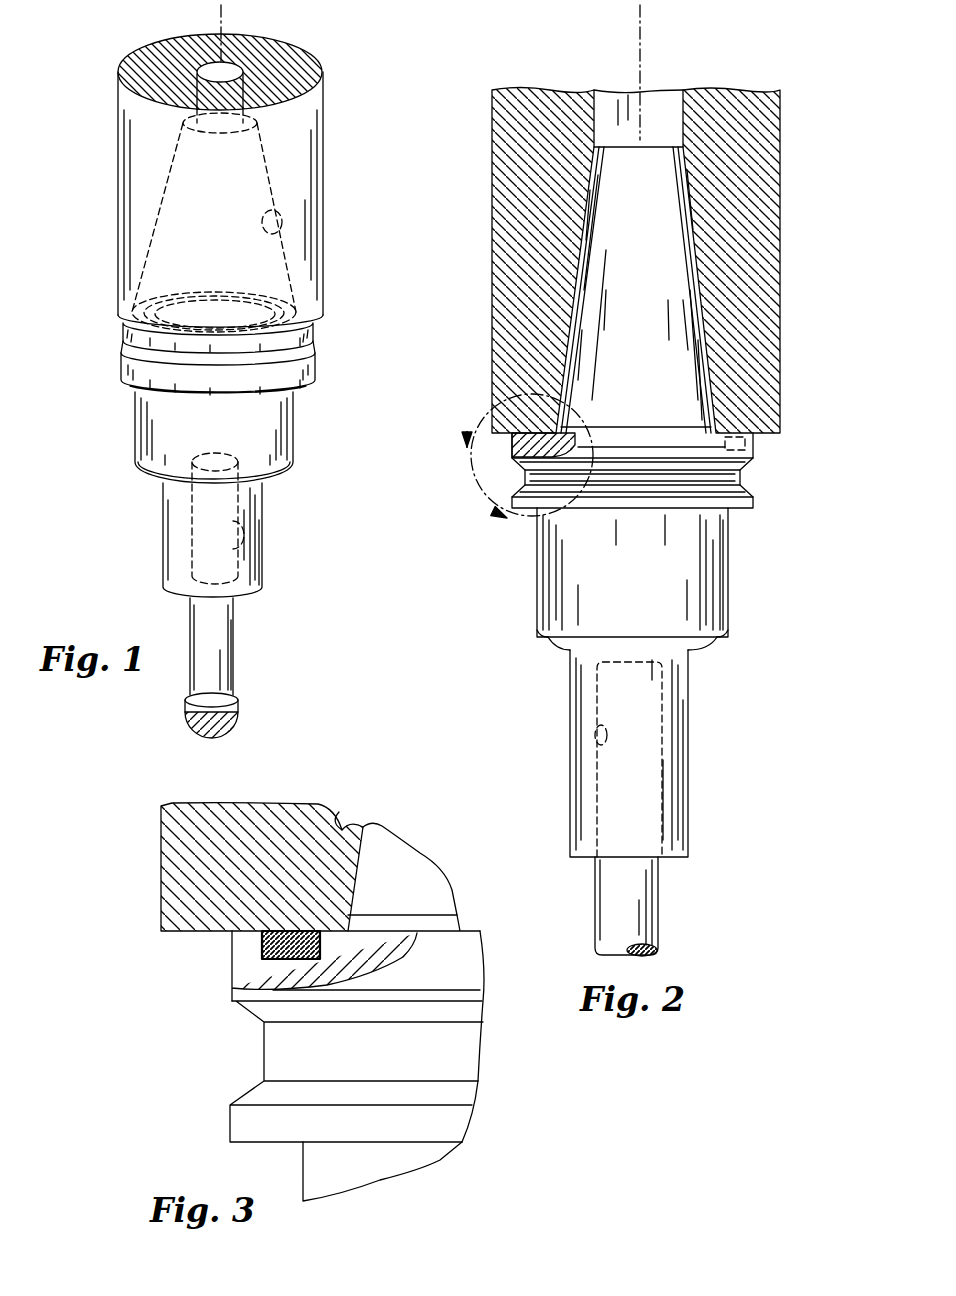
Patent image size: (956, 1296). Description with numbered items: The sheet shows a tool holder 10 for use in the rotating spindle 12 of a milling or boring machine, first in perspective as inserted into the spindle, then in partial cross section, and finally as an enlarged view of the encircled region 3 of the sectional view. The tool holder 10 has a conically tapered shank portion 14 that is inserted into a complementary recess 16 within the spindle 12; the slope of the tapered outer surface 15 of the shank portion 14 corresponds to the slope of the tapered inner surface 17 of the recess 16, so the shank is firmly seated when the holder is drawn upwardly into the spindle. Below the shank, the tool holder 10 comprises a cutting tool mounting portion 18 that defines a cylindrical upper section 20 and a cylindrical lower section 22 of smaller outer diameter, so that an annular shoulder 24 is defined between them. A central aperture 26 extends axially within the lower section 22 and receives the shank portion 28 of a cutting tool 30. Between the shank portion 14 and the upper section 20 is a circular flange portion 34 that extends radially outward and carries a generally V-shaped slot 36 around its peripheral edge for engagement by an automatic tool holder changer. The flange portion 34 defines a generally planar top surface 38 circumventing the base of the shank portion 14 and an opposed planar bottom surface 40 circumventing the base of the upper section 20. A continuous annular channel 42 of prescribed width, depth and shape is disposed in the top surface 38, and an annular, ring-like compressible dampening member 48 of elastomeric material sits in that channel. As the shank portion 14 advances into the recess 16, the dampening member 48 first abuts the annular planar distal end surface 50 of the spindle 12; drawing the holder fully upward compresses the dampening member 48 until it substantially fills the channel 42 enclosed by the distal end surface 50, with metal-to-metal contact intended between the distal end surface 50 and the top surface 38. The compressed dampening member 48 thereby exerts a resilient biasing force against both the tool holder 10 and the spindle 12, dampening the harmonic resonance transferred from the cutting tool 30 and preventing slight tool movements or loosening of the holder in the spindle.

In FIG. 1, the tool holder 10 is at (303, 404).
In FIG. 2, the tool holder 10 is at (760, 523).
In FIG. 3, the tool holder 10 is at (197, 1082).
In FIG. 1, the rotating spindle 12 is at (336, 78).
In FIG. 2, the rotating spindle 12 is at (789, 115).
In FIG. 3, the rotating spindle 12 is at (262, 867).
In FIG. 1, the shank portion 14 is at (272, 176).
In FIG. 2, the shank portion 14 is at (695, 204).
In FIG. 3, the shank portion 14 is at (392, 856).
In FIG. 1, the tapered outer surface 15 is at (172, 185).
In FIG. 3, the tapered outer surface 15 is at (346, 830).
In FIG. 2, the recess 16 is at (663, 133).
In FIG. 1, the tapered inner surface 17 is at (266, 238).
In FIG. 1, the cutting tool mounting portion 18 is at (136, 470).
In FIG. 2, the cutting tool mounting portion 18 is at (749, 622).
In FIG. 1, the upper section 20 is at (145, 422).
In FIG. 2, the upper section 20 is at (545, 598).
In FIG. 3, the upper section 20 is at (380, 1172).
In FIG. 1, the lower section 22 is at (256, 568).
In FIG. 2, the lower section 22 is at (681, 750).
In FIG. 2, the annular shoulder 24 is at (550, 643).
In FIG. 1, the central aperture 26 is at (240, 547).
In FIG. 2, the central aperture 26 is at (604, 731).
In FIG. 1, the shank portion of cutting tool 28 is at (200, 532).
In FIG. 2, the shank portion of cutting tool 28 is at (651, 703).
In FIG. 1, the cutting tool 30 is at (246, 637).
In FIG. 2, the cutting tool 30 is at (673, 907).
In FIG. 1, the flange portion 34 is at (120, 348).
In FIG. 2, the flange portion 34 is at (759, 473).
In FIG. 3, the flange portion 34 is at (230, 1015).
In FIG. 2, the V-shaped slot 36 is at (731, 482).
In FIG. 3, the V-shaped slot 36 is at (467, 1054).
In FIG. 3, the top surface 38 is at (245, 931).
In FIG. 2, the bottom surface 40 is at (530, 509).
In FIG. 3, the bottom surface 40 is at (252, 1142).
In FIG. 2, the annular channel 42 is at (744, 441).
In FIG. 2, the dampening member 48 is at (542, 440).
In FIG. 3, the dampening member 48 is at (264, 944).
In FIG. 2, the distal end surface 50 is at (500, 441).
In FIG. 3, the distal end surface 50 is at (181, 932).
In FIG. 2, the encircled region 3 is at (521, 460).